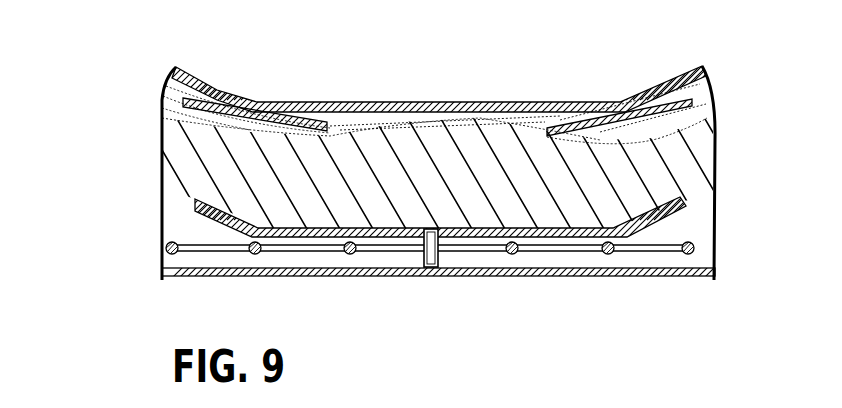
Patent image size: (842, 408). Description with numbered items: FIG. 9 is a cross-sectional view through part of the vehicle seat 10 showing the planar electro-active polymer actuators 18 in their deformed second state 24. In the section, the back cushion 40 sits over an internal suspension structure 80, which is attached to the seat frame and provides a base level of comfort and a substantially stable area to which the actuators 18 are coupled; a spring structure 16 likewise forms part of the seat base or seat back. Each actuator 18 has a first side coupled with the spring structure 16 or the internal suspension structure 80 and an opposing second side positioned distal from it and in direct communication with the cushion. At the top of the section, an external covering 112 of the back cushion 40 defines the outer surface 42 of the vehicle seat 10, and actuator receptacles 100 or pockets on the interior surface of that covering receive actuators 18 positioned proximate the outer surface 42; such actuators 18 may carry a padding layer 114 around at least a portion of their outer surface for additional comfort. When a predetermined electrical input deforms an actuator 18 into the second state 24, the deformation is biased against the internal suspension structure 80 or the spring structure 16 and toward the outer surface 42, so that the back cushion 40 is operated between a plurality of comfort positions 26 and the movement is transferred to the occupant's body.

The vehicle seat 10 is at (138, 87).
The spring structure 16 is at (607, 252).
The electro-active polymer actuator 18 is at (266, 108).
The second state 24 is at (198, 243).
The comfort positions 26 is at (657, 38).
The back cushion 40 is at (220, 160).
The outer surface 42 is at (384, 102).
The internal suspension structure 80 is at (431, 258).
The actuator receptacle 100 is at (410, 110).
The external covering 112 is at (493, 102).
The padding layer 114 is at (226, 38).